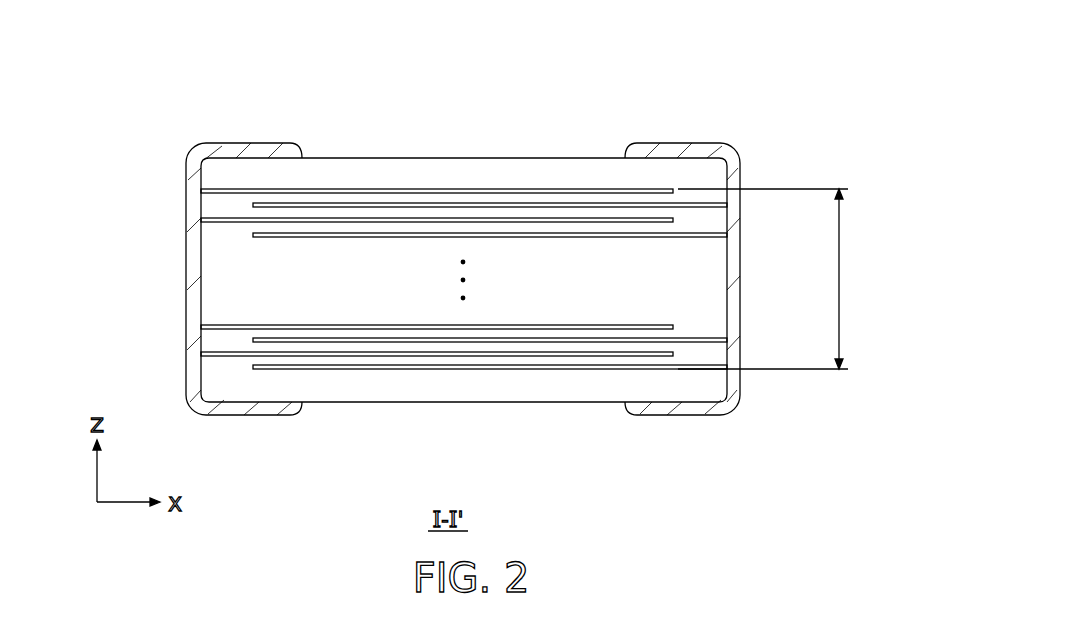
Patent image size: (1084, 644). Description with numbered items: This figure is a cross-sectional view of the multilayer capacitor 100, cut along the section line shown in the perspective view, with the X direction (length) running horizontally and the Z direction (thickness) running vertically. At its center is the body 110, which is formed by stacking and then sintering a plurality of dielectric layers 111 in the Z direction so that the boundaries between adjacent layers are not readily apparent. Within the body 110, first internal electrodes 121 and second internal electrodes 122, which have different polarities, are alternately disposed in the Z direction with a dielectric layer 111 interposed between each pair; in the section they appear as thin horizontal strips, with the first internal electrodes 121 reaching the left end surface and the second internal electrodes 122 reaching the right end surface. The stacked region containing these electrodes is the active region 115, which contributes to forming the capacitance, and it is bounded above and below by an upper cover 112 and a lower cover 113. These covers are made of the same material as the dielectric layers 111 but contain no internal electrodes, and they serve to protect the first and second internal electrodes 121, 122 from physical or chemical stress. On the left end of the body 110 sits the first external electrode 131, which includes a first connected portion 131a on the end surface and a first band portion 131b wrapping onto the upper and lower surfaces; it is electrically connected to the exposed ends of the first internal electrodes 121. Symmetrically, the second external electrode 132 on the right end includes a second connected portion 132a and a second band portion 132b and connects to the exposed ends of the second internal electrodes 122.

The multilayer capacitor 100 is at (405, 47).
The body 110 is at (414, 158).
The dielectric layer 111 is at (702, 220).
The upper cover 112 is at (527, 175).
The lower cover 113 is at (524, 404).
The active region 115 is at (781, 279).
The first internal electrode 121 is at (212, 222).
The second internal electrode 122 is at (700, 236).
The first external electrode 131 is at (143, 79).
The first connected portion 131a is at (187, 205).
The first band portion 131b is at (258, 147).
The second external electrode 132 is at (785, 79).
The second connected portion 132a is at (742, 178).
The second band portion 132b is at (668, 150).